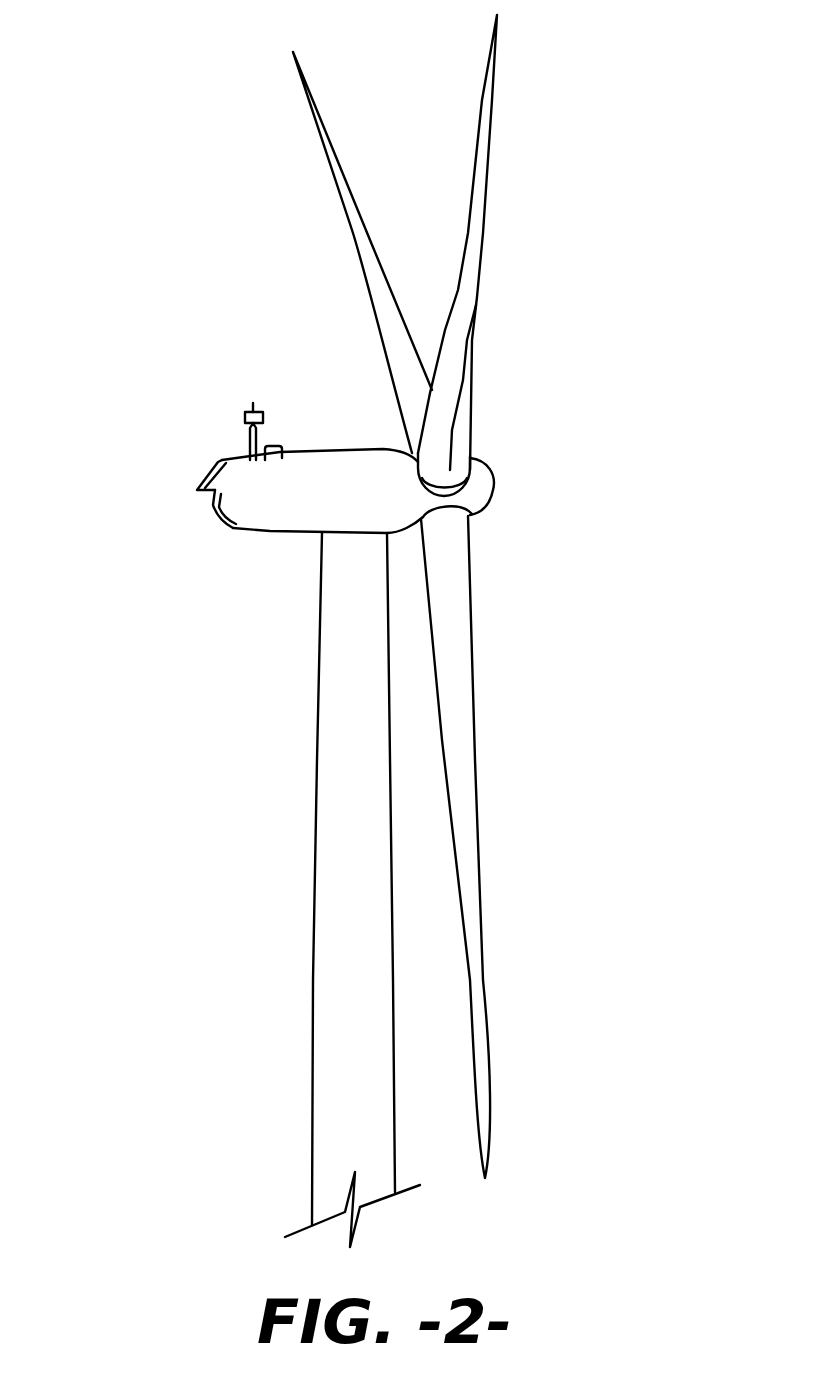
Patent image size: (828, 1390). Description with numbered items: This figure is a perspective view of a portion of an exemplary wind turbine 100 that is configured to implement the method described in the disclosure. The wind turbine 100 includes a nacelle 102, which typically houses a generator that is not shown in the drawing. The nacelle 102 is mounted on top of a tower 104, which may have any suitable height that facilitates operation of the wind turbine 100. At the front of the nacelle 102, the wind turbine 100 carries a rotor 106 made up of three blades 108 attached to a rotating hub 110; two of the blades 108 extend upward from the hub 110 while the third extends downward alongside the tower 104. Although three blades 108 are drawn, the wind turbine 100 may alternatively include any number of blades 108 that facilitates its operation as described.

The wind turbine 100 is at (393, 631).
The nacelle 102 is at (275, 540).
The tower 104 is at (313, 960).
The rotor 106 is at (624, 349).
The blades 108 is at (365, 218).
The rotating hub 110 is at (493, 487).